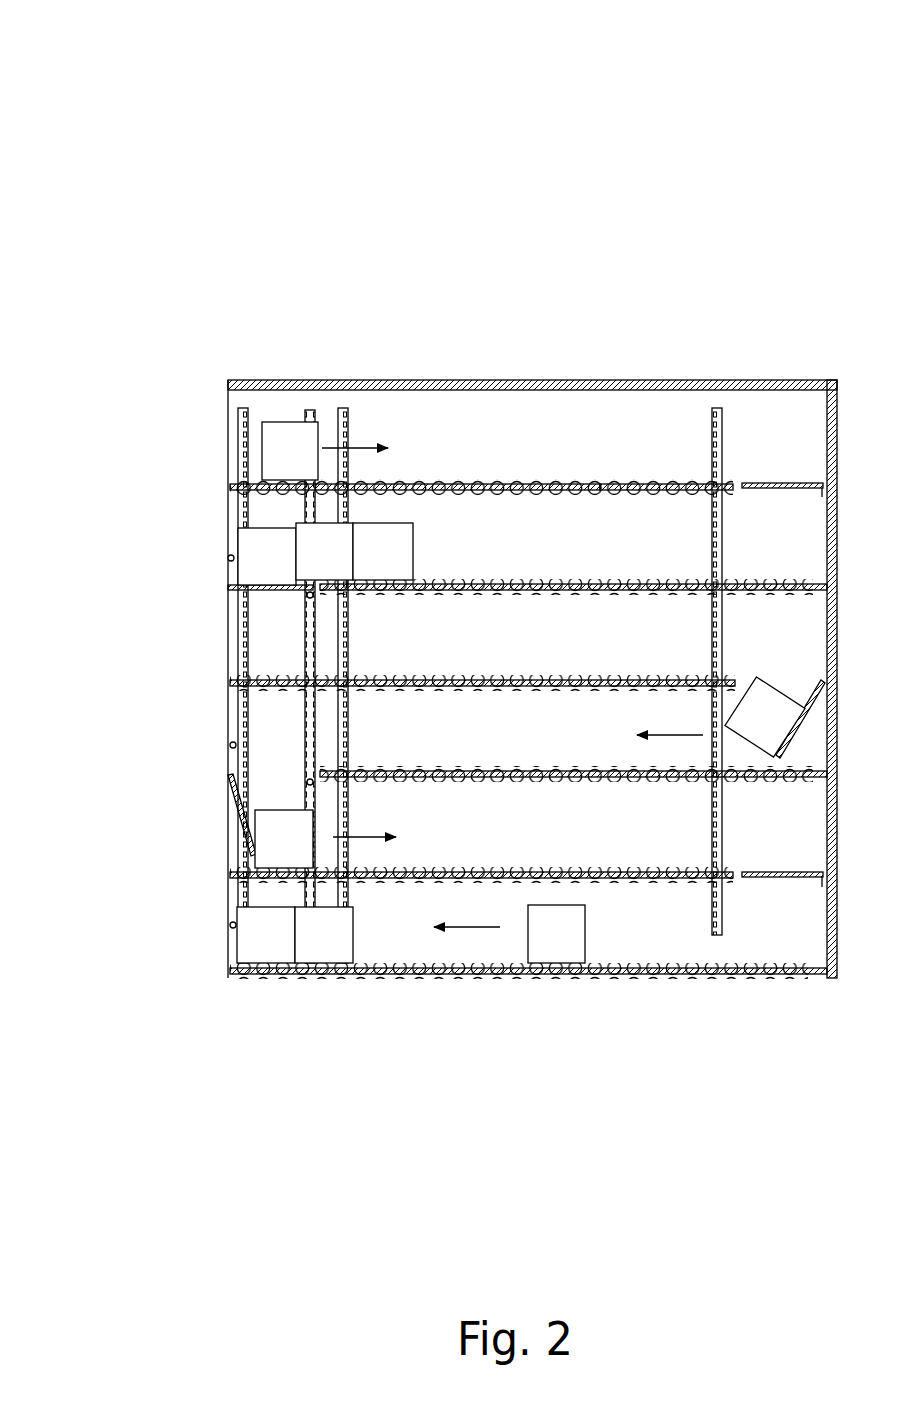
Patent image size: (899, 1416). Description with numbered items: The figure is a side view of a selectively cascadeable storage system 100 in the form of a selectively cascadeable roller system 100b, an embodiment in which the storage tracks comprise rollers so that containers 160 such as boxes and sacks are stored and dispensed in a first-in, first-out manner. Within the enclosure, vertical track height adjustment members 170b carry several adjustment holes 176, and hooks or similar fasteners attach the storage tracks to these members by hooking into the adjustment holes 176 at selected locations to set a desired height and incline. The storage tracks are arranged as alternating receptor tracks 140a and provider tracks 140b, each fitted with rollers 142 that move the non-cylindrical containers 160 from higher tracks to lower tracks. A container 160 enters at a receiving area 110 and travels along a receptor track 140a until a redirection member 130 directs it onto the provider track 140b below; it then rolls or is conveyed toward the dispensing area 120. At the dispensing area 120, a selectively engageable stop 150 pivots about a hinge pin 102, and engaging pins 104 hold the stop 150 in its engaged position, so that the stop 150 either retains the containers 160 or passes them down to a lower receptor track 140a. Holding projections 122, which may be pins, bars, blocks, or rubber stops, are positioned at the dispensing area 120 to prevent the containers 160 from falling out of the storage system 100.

The selectively cascadeable storage system 100 is at (430, 489).
The selectively cascadeable roller system 100b is at (532, 679).
The hinge pin 102 is at (230, 778).
The engaging pin 104 is at (314, 778).
The receiving area 110 is at (255, 412).
The dispensing area 120 is at (260, 727).
The holding projection 122 is at (228, 558).
The redirection member 130 is at (783, 492).
The receptor track 140a is at (500, 480).
The provider track 140b is at (570, 578).
The roller 142 is at (612, 478).
The selectively engageable stop 150 is at (245, 838).
The container 160 is at (415, 543).
The track height adjustment member 170b is at (710, 630).
The adjustment hole 176 is at (240, 662).